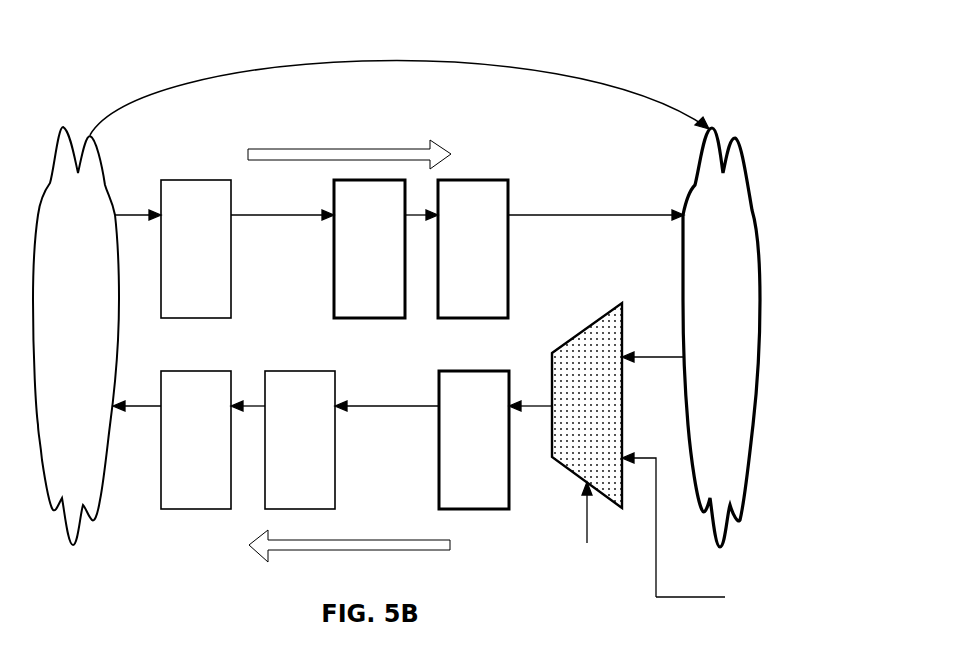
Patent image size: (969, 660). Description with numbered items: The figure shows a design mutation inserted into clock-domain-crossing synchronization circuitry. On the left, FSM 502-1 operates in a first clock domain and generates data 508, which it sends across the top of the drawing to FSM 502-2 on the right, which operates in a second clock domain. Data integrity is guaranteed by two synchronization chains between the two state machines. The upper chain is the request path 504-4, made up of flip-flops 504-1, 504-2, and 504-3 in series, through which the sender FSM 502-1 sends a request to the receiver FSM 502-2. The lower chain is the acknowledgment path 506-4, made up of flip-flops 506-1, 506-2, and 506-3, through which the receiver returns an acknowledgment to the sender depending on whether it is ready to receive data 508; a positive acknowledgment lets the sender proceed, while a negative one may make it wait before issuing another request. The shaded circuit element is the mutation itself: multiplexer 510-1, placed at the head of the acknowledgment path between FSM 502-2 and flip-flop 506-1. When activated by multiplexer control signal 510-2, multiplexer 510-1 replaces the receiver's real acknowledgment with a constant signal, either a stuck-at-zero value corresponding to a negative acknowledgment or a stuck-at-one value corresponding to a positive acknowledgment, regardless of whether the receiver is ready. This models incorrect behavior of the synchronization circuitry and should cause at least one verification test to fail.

The FSM 502-1 is at (76, 336).
The FSM 502-2 is at (721, 337).
The flip-flop 504-1 is at (196, 249).
The flip-flop 504-2 is at (369, 249).
The flip-flop 504-3 is at (473, 249).
The request path 504-4 is at (399, 169).
The flip-flop 506-1 is at (474, 440).
The flip-flop 506-2 is at (300, 440).
The flip-flop 506-3 is at (196, 440).
The acknowledgment path 506-4 is at (332, 491).
The data 508 is at (399, 84).
The multiplexer 510-1 is at (680, 455).
The multiplexer control signal 510-2 is at (586, 554).